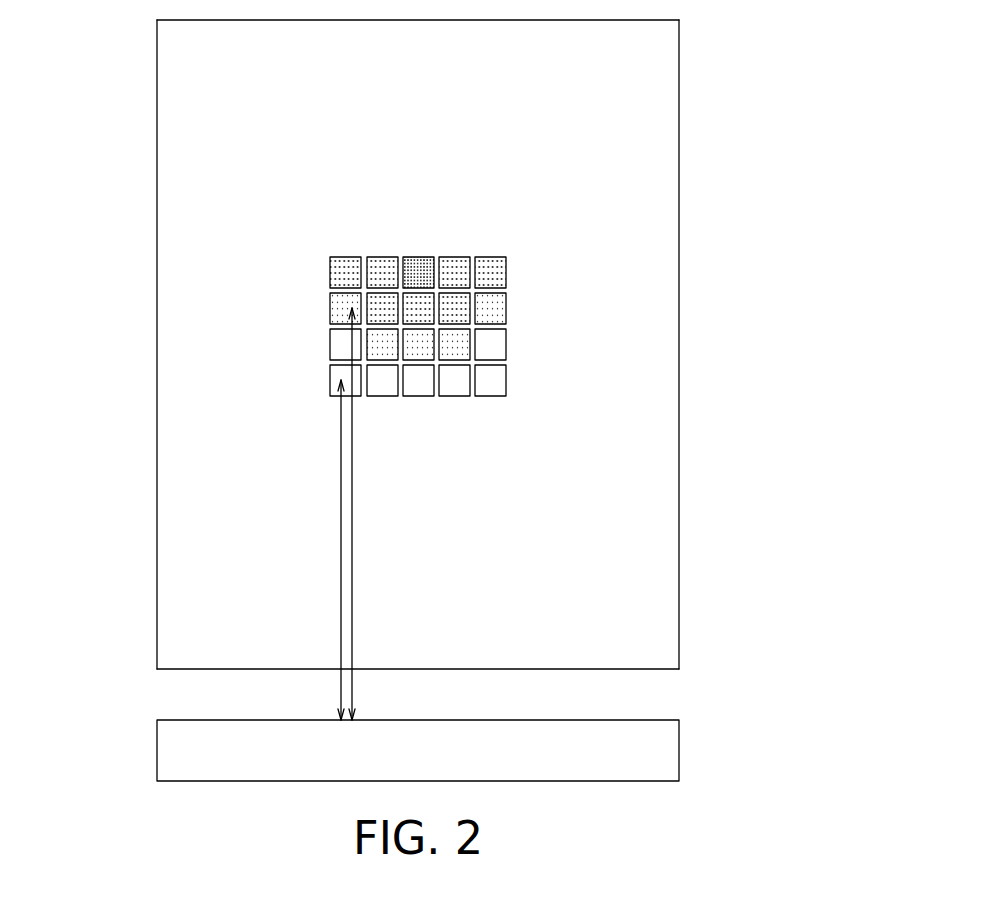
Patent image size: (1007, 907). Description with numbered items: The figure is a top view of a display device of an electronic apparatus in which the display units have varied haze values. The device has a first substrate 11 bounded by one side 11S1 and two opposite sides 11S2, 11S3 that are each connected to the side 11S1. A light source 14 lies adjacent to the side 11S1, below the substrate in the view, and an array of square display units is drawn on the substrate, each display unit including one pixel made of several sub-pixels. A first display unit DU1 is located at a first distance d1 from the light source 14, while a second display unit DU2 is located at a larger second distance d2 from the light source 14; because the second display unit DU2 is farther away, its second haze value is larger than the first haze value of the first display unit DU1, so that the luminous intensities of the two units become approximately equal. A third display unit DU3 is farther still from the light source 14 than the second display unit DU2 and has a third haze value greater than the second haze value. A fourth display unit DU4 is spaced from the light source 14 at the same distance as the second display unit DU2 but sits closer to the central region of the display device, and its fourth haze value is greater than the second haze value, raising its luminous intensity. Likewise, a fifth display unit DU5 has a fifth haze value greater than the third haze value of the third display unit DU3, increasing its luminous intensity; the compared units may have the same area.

The first substrate 11 is at (422, 344).
The side of first substrate 11S1 is at (213, 668).
The opposite side of first substrate 11S2 is at (157, 343).
The opposite side of first substrate 11S3 is at (680, 452).
The light source 14 is at (432, 763).
The first display unit DU1 is at (336, 374).
The second display unit DU2 is at (335, 310).
The third display unit DU3 is at (338, 268).
The fourth display unit DU4 is at (420, 309).
The fifth display unit DU5 is at (418, 258).
The first distance d1 is at (326, 550).
The second distance d2 is at (367, 514).